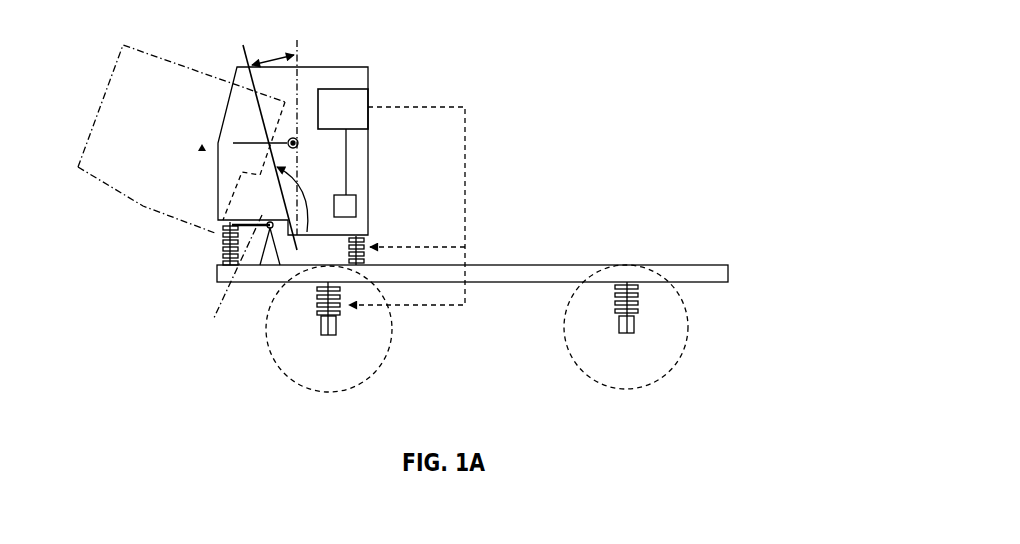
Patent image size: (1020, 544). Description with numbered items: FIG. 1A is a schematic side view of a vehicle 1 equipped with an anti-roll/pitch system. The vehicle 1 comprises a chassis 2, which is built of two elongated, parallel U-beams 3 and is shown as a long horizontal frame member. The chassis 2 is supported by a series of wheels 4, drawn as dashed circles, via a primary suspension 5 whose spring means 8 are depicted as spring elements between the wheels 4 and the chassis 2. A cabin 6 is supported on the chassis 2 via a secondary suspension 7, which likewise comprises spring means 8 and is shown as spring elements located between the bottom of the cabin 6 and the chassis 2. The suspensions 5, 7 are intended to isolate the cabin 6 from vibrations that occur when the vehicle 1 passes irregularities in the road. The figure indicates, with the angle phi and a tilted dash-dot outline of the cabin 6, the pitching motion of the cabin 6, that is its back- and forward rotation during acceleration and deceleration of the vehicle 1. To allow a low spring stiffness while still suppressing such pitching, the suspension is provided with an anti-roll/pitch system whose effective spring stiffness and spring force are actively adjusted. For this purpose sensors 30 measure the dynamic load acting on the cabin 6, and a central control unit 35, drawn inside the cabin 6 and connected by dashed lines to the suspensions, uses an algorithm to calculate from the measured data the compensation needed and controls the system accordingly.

The vehicle 1 is at (697, 101).
The chassis 2 is at (489, 247).
The U-beams 3 is at (537, 275).
The wheels 4 is at (340, 358).
The primary suspension 5 is at (288, 311).
The cabin 6 is at (357, 154).
The secondary suspension 7 is at (208, 250).
The spring means 8 is at (342, 308).
The sensors 30 is at (346, 204).
The central control unit 35 is at (343, 142).